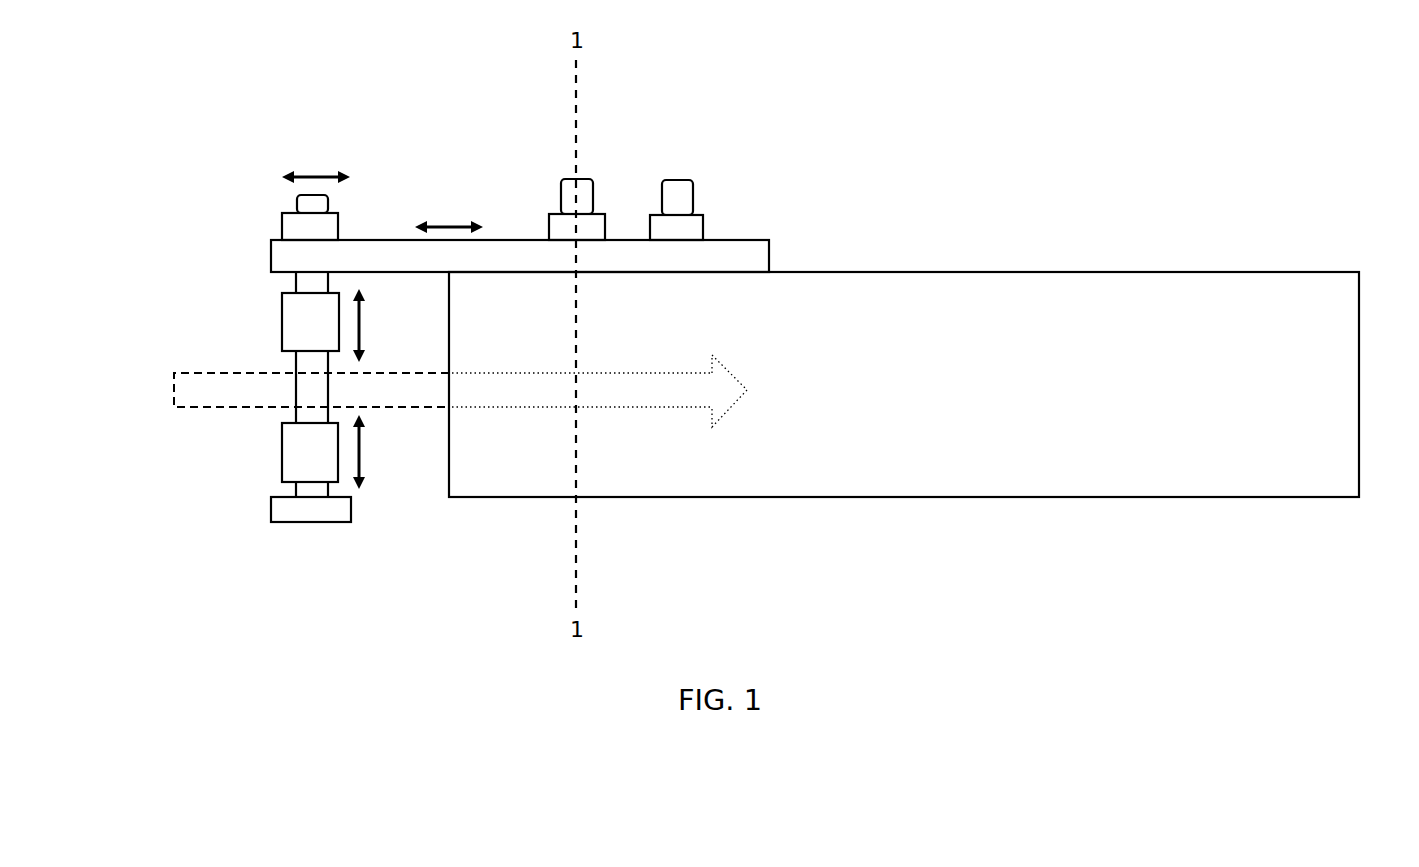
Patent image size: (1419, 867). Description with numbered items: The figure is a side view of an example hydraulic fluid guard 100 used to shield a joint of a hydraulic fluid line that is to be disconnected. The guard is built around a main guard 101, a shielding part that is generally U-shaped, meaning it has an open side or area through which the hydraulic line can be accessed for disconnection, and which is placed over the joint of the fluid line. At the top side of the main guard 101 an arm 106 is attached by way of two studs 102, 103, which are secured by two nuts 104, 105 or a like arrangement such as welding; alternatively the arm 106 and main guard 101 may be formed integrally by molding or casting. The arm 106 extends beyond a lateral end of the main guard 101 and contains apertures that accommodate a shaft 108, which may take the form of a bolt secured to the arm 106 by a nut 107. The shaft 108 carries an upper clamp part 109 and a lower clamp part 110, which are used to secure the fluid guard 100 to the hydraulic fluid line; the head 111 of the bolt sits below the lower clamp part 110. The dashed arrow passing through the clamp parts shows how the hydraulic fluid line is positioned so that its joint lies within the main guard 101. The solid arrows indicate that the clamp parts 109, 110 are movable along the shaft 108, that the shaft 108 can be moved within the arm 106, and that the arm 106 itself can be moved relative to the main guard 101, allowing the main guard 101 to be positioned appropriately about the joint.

The hydraulic fluid guard 100 is at (934, 164).
The main guard 101 is at (1138, 272).
The stud 102 is at (693, 191).
The stud 103 is at (593, 187).
The nut 104 is at (703, 228).
The nut 105 is at (549, 228).
The arm 106 is at (769, 260).
The nut 107 is at (338, 221).
The shaft 108 is at (295, 200).
The clamp part 109 is at (282, 333).
The lower clamp part 110 is at (282, 455).
The head 111 is at (310, 522).